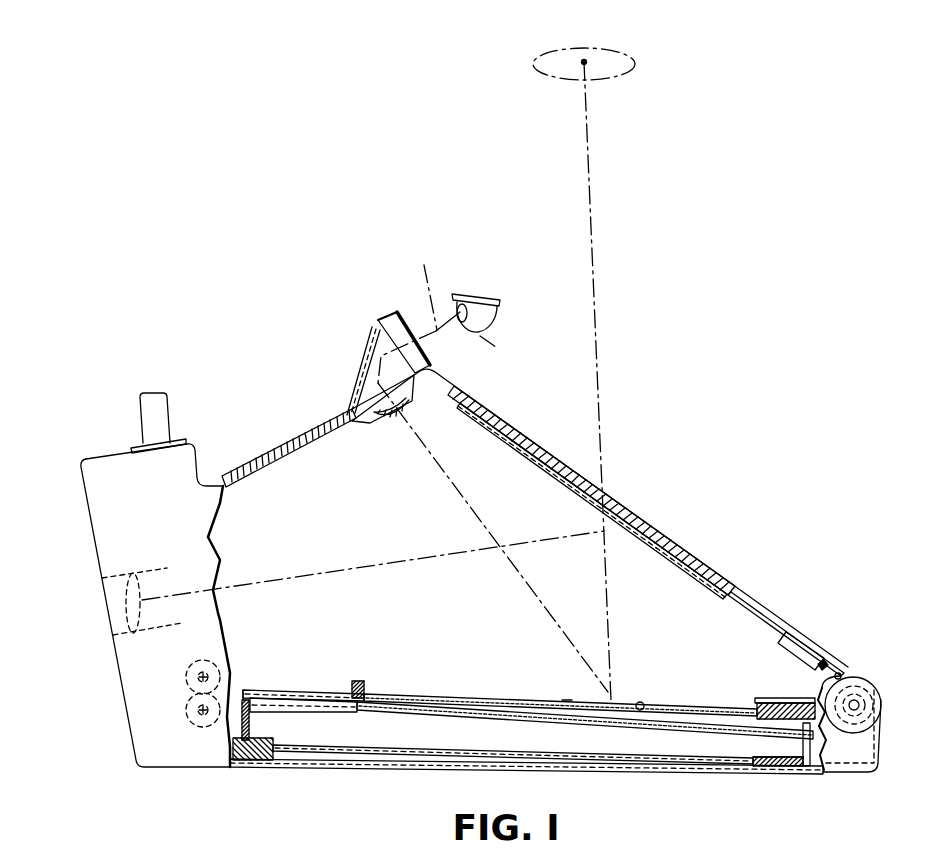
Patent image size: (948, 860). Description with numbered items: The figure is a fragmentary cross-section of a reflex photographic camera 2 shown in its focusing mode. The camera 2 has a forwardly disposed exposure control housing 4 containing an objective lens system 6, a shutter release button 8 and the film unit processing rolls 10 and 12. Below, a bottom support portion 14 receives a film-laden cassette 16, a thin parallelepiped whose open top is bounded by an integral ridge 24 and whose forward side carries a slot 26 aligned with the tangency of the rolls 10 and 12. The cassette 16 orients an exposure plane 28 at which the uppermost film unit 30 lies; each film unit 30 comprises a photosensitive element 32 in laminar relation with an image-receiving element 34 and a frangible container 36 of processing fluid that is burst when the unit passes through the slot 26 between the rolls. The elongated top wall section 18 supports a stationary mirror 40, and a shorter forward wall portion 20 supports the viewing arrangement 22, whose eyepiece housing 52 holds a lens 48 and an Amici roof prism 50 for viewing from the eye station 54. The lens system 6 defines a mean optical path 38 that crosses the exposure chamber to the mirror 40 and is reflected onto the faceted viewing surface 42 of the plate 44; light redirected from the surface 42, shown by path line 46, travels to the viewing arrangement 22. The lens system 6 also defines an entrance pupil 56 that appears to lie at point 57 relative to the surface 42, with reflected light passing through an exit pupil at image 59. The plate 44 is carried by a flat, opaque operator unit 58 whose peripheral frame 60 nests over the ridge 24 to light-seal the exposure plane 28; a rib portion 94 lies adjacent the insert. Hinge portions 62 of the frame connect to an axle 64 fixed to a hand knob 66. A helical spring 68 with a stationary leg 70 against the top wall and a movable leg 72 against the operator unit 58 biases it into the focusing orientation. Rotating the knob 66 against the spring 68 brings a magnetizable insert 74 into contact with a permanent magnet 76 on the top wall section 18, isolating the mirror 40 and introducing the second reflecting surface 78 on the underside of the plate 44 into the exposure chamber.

The photographic camera 2 is at (671, 533).
The lamp housing 4 is at (87, 498).
The objective lens system 6 is at (126, 565).
The shutter release button 8 is at (157, 400).
The film unit processing roll 10 is at (208, 662).
The film unit processing roll 12 is at (186, 709).
The bottom support portion 14 is at (331, 770).
The film cassette 16 is at (816, 767).
The top wall section 18 is at (710, 567).
The forward wall portion 20 is at (310, 436).
The viewing arrangement 22 is at (356, 348).
The ridge 24 is at (385, 692).
The slot 26 is at (244, 700).
The exposure plane 28 is at (421, 703).
The film unit 30 is at (463, 728).
The photosensitive element 32 is at (492, 720).
The image-receiving element 34 is at (529, 712).
The frangible container 36 is at (297, 711).
The optical path line 38 is at (305, 575).
The mirror 40 is at (551, 488).
The reflecting viewing surface 42 is at (678, 695).
The plate 44 is at (699, 702).
The path line 46 is at (422, 313).
The lens 48 is at (404, 407).
The Amici roof prism 50 is at (400, 362).
The eyepiece housing 52 is at (378, 321).
The eye station 54 is at (499, 328).
The entrance pupil 56 is at (615, 50).
The pupil point 57 is at (584, 62).
The operator unit 58 is at (778, 730).
The image 59 is at (392, 425).
The peripheral frame 60 is at (570, 692).
The hinge portion 62 is at (824, 733).
The axle 64 is at (859, 702).
The hand manipulated knob 66 is at (863, 728).
The helical spring 68 is at (874, 706).
The stationary leg 70 is at (842, 672).
The movable leg 72 is at (778, 703).
The magnetizable metal insert 74 is at (755, 699).
The permanent magnet 76 is at (812, 632).
The second reflecting surface 78 is at (645, 703).
The rib portion 94 is at (354, 681).